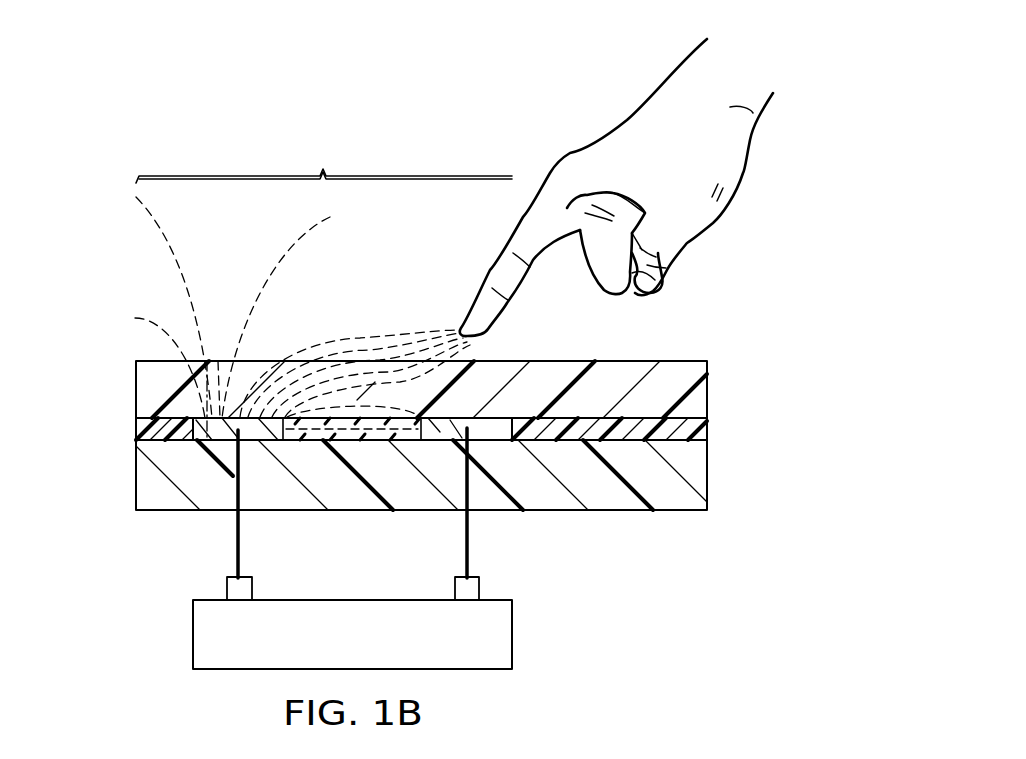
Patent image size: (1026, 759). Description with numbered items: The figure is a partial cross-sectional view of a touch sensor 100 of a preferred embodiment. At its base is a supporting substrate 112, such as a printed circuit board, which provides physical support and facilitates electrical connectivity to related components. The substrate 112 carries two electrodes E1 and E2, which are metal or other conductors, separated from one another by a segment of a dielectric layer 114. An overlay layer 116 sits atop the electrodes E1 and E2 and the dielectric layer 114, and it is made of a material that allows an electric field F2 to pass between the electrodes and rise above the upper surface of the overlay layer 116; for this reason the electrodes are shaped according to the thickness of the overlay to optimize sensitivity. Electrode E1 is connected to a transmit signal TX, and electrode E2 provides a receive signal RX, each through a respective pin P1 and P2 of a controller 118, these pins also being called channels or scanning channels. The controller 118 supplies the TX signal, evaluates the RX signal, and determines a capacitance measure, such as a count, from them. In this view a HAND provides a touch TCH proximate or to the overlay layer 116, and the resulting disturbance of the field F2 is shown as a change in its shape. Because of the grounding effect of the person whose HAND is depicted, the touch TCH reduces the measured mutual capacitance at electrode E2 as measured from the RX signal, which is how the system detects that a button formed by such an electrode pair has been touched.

The sensor 100 is at (92, 155).
The overlay layer 116 is at (145, 392).
The dielectric layer 114 is at (145, 429).
The supporting substrate 112 is at (145, 485).
The controller 118 is at (193, 634).
The electrode E1 is at (215, 431).
The electrode E2 is at (488, 432).
The transmit signal TX is at (257, 504).
The receive signal RX is at (447, 503).
The pin P1 is at (225, 586).
The pin P2 is at (482, 586).
The field F2 is at (324, 164).
The touch TCH is at (307, 318).
The hand HAND is at (622, 118).